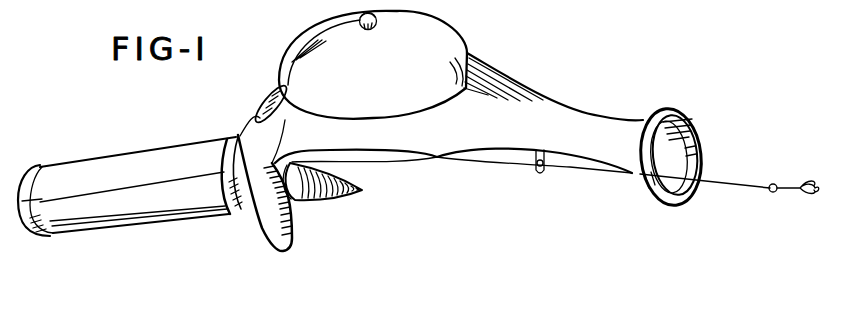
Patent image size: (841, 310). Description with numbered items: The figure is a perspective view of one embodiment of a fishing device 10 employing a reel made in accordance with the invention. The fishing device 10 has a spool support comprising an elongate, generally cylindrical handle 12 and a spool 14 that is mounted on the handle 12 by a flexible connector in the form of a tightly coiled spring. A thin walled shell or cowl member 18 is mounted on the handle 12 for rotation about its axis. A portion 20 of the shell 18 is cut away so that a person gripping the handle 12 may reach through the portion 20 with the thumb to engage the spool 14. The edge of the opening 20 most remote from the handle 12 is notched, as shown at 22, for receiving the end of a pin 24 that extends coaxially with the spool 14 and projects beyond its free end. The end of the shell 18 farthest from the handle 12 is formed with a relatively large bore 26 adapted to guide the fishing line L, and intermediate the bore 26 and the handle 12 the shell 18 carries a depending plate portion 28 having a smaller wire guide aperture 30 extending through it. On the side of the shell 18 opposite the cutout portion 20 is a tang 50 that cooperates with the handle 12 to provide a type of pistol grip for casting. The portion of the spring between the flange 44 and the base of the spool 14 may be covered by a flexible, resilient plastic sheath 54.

The fishing device 10 is at (222, 91).
The handle 12 is at (88, 162).
The spool 14 is at (297, 47).
The shell or cowl member 18 is at (462, 44).
The cut away portion of the shell 20 is at (260, 110).
The notch 22 is at (360, 17).
The pin 24 is at (376, 15).
The bore 26 is at (700, 150).
The depending plate portion 28 is at (535, 165).
The wire guide aperture 30 is at (543, 168).
The flange 44 is at (305, 200).
The tang 50 is at (269, 235).
The sheath 54 is at (356, 186).
The fishing line L is at (748, 192).